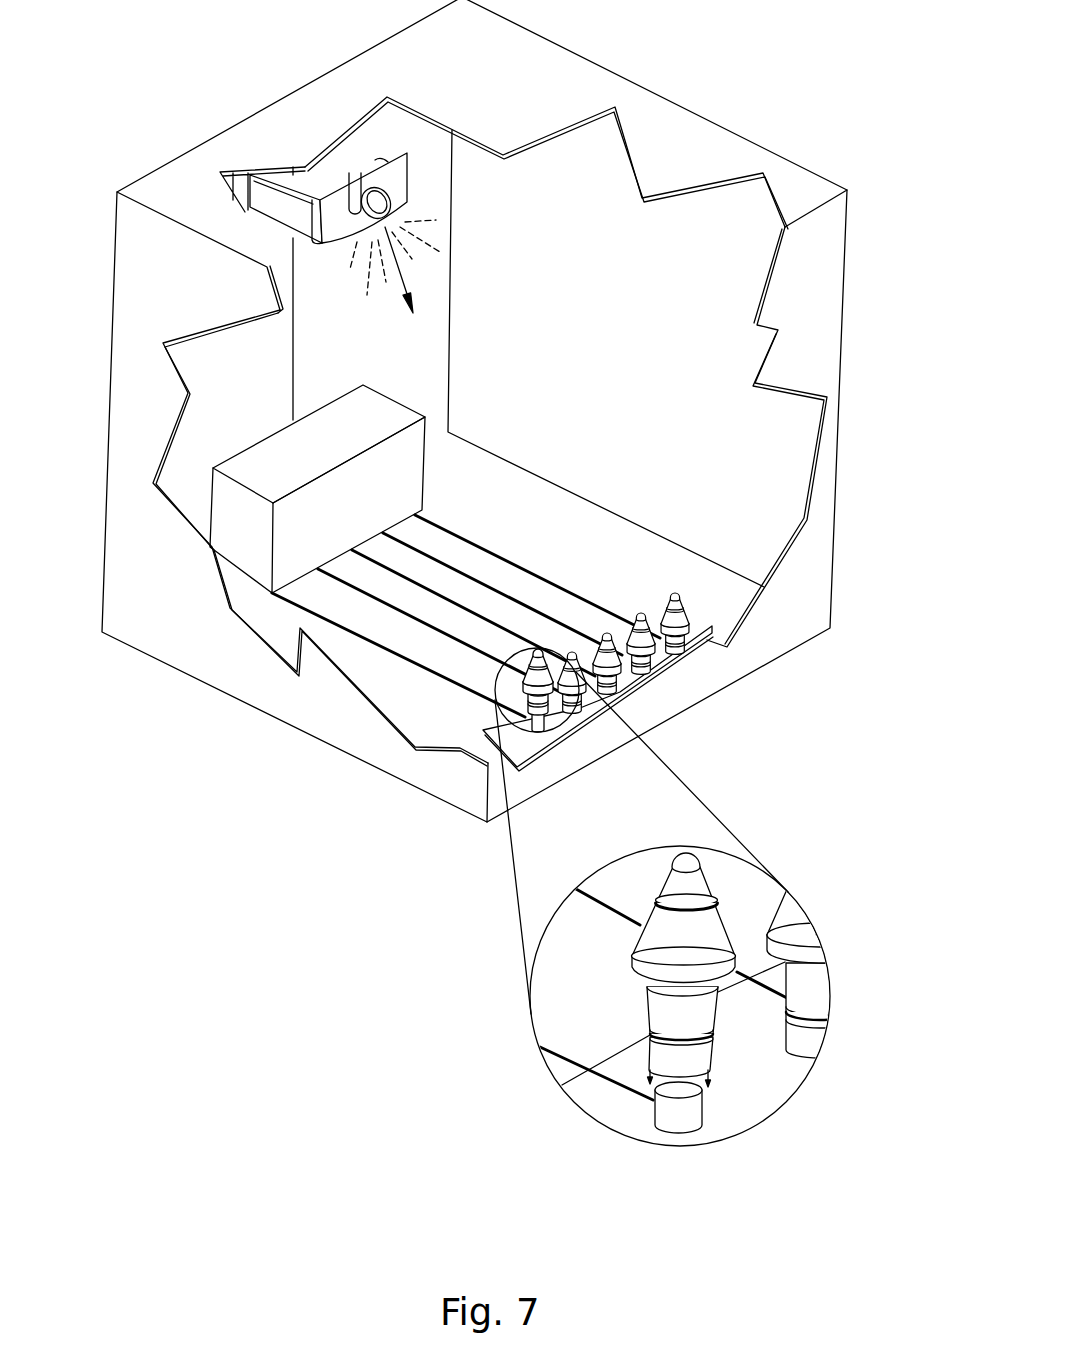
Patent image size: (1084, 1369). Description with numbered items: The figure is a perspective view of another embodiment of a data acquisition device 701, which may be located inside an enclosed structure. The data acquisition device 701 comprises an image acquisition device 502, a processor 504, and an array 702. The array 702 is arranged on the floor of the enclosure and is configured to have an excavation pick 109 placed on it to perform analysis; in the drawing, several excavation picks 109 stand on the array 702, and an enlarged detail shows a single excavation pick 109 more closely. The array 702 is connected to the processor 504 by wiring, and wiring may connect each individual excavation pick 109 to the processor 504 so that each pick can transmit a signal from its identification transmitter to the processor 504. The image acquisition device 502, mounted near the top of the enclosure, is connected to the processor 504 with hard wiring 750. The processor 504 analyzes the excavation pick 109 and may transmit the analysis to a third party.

The data acquisition device 701 is at (709, 87).
The image acquisition device 502 is at (340, 158).
The processor 504 is at (348, 507).
The array 702 is at (627, 677).
The excavation pick 109 is at (745, 894).
The hard wiring 750 is at (648, 1043).